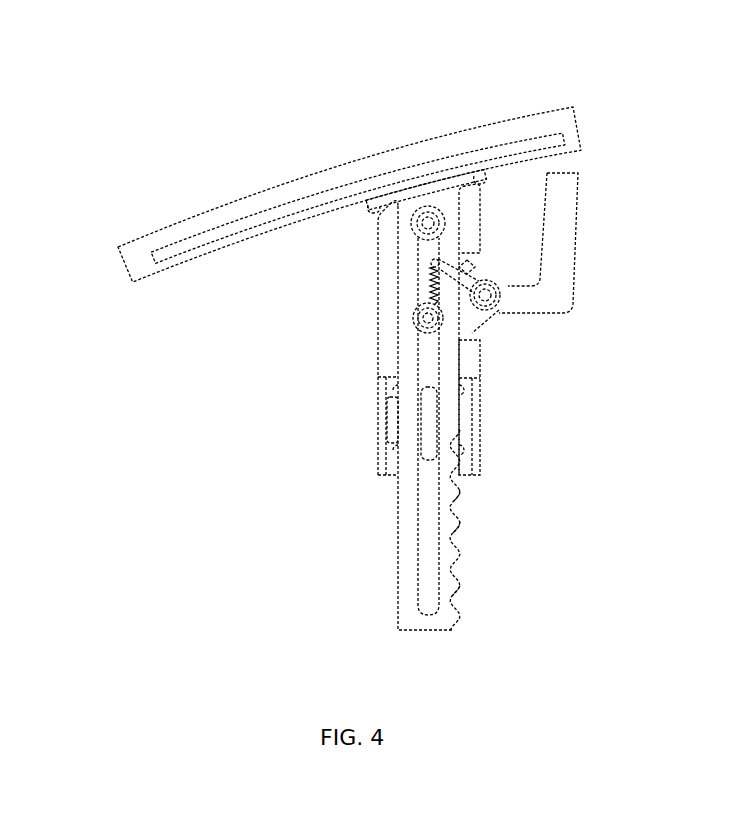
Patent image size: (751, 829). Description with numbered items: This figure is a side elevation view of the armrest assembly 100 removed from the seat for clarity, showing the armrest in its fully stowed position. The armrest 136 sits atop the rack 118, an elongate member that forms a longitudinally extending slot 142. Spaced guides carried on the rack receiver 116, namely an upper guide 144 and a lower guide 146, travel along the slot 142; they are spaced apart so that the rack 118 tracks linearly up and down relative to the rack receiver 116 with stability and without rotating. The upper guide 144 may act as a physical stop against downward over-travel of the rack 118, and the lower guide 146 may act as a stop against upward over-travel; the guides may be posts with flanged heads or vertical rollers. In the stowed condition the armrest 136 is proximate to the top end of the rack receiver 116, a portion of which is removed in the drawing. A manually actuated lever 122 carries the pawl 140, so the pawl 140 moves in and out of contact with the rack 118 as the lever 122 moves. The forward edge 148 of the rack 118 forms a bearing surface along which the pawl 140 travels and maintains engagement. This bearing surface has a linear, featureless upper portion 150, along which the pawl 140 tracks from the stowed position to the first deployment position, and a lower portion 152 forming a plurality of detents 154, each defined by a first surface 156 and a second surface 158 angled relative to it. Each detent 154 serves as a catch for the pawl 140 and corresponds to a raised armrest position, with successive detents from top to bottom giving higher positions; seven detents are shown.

The armrest assembly 100 is at (610, 108).
The armrest 136 is at (331, 175).
The rack receiver 116 is at (382, 280).
The rack 118 is at (408, 568).
The lever 122 is at (562, 287).
The pawl 140 is at (475, 270).
The slot 142 is at (430, 520).
The upper guide 144 is at (412, 223).
The lower guide 146 is at (413, 318).
The forward edge 148 is at (461, 361).
The upper portion 150 is at (472, 223).
The lower portion 152 is at (478, 608).
The detent 154 is at (460, 498).
The first surface 156 is at (453, 525).
The second surface 158 is at (455, 588).